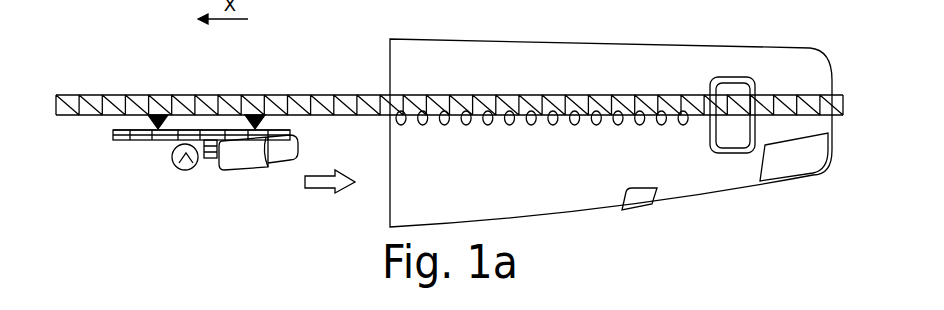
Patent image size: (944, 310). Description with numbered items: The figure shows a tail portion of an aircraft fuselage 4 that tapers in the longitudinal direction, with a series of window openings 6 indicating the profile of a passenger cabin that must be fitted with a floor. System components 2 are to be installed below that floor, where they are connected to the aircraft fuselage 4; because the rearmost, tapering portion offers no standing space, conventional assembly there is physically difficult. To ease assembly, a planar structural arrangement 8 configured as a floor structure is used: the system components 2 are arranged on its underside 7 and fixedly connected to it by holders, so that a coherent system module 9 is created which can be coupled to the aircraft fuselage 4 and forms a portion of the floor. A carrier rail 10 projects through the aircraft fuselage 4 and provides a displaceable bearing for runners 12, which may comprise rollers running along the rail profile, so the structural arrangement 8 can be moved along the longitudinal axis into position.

The system components 2 is at (255, 158).
The aircraft fuselage 4 is at (585, 62).
The window openings 6 is at (403, 123).
The underside 7 is at (119, 141).
The structural arrangement 8 is at (150, 141).
The system module 9 is at (184, 171).
The carrier rail 10 is at (333, 96).
The runners 12 is at (166, 96).